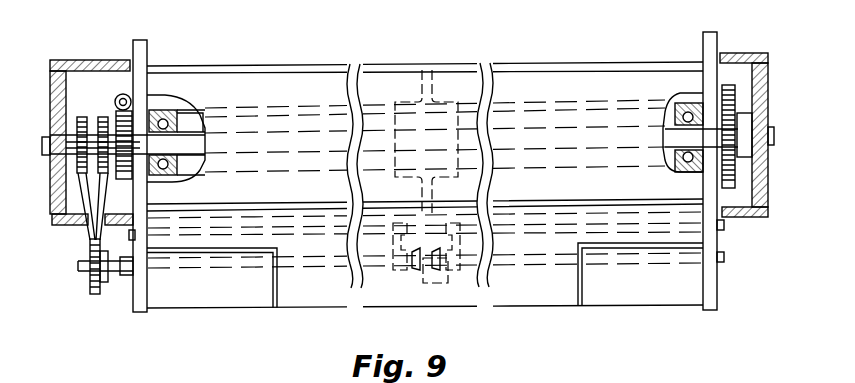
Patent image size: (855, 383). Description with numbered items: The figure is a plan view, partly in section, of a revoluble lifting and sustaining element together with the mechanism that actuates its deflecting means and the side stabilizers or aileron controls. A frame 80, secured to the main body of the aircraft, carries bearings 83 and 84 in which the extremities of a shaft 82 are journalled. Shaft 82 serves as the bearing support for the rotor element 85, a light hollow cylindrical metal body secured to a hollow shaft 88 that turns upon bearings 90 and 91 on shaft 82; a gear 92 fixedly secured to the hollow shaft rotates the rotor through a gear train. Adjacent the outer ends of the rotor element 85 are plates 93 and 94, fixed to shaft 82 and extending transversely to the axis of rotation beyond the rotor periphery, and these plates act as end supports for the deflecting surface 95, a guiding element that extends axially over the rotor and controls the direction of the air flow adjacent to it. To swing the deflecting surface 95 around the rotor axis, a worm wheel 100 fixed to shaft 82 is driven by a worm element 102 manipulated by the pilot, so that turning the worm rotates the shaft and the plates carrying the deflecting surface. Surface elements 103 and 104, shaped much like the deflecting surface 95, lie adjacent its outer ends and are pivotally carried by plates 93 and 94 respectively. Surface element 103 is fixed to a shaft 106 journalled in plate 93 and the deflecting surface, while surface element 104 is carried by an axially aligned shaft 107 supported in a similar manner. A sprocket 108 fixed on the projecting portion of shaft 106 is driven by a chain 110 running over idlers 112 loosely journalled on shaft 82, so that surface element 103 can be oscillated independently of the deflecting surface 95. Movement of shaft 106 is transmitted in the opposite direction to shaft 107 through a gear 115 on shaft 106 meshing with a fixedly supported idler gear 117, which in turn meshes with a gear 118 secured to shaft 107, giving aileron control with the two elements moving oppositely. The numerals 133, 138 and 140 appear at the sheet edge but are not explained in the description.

The frame 80 is at (62, 60).
The shaft 82 is at (750, 145).
The bearing 83 is at (57, 128).
The bearing 84 is at (745, 124).
The rotor element 85 is at (316, 54).
The hollow shaft 88 is at (164, 110).
The bearing 90 is at (186, 114).
The bearing 91 is at (682, 97).
The gear 92 is at (736, 88).
The plate 93 is at (134, 56).
The plate 94 is at (718, 47).
The deflecting surface 95 is at (316, 290).
The worm wheel 100 is at (88, 222).
The worm element 102 is at (119, 95).
The surface element 103 is at (217, 295).
The surface element 104 is at (658, 292).
The shaft 106 is at (129, 275).
The shaft 107 is at (725, 258).
The sprocket 108 is at (88, 279).
The chain 110 is at (96, 294).
The idlers 112 is at (100, 123).
The gear 115 is at (412, 268).
The idler gear 117 is at (432, 283).
The gear 118 is at (450, 276).
The part 133 is at (263, 377).
The part 138 is at (201, 377).
The part 140 is at (158, 377).